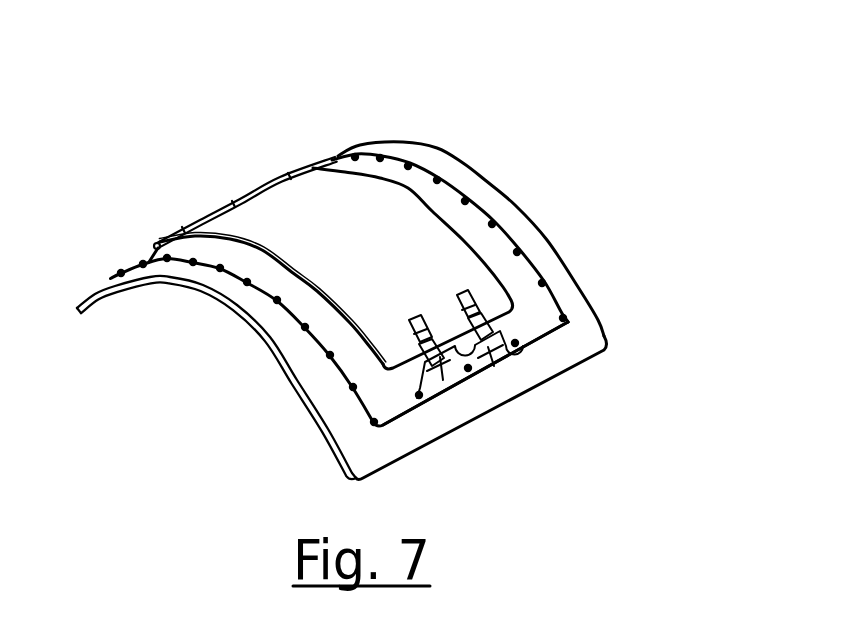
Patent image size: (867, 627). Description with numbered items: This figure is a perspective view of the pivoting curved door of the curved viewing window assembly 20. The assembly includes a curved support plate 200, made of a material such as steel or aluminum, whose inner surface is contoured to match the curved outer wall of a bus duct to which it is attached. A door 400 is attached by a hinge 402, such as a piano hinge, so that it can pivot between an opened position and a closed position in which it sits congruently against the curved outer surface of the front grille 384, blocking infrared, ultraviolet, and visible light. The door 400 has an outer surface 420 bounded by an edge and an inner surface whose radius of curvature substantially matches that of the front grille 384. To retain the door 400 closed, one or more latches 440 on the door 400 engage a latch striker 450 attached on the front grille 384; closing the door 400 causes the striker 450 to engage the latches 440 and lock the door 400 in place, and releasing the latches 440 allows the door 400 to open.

The curved viewing window assembly 20 is at (437, 88).
The support plate 200 is at (494, 204).
The front grille 384 is at (536, 313).
The door 400 is at (300, 192).
The hinge 402 is at (227, 202).
The outer surface 420 is at (260, 235).
The latches 440 is at (450, 288).
The latch striker 450 is at (457, 388).